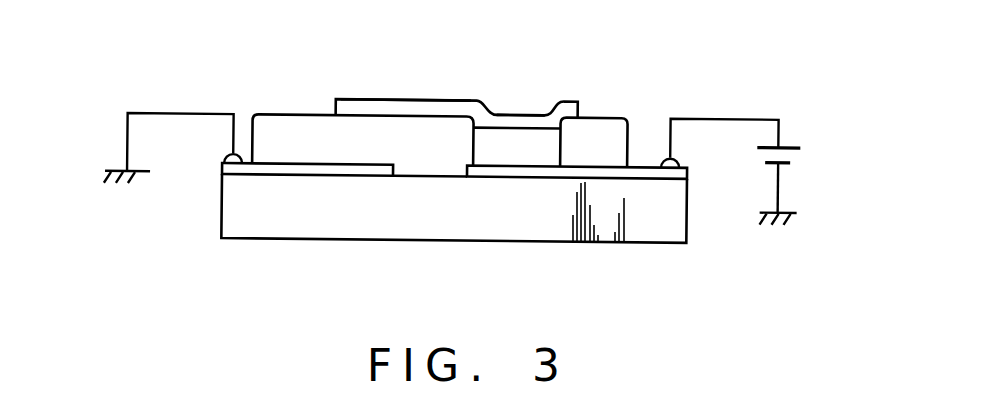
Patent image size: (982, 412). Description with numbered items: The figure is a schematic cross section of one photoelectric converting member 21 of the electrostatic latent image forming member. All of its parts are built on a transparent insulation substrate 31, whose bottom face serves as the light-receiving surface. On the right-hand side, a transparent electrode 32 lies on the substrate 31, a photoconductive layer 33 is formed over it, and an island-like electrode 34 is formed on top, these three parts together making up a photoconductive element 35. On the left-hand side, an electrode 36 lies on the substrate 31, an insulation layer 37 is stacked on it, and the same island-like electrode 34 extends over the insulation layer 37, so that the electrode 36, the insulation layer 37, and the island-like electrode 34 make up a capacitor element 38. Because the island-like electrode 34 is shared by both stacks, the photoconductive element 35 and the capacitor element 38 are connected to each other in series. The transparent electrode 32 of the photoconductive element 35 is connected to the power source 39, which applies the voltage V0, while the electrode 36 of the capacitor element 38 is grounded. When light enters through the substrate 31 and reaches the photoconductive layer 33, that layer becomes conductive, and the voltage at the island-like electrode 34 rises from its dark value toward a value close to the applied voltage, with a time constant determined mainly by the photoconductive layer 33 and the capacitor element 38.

The photoelectric converting member 21 is at (704, 86).
The transparent insulation substrate 31 is at (647, 230).
The transparent electrode 32 is at (672, 176).
The photoconductive layer 33 is at (557, 143).
The island-like electrode 34 is at (568, 100).
The photoconductive element 35 is at (462, 67).
The electrode 36 is at (300, 168).
The insulation layer 37 is at (292, 127).
The capacitor element 38 is at (338, 65).
The power source 39 is at (798, 180).